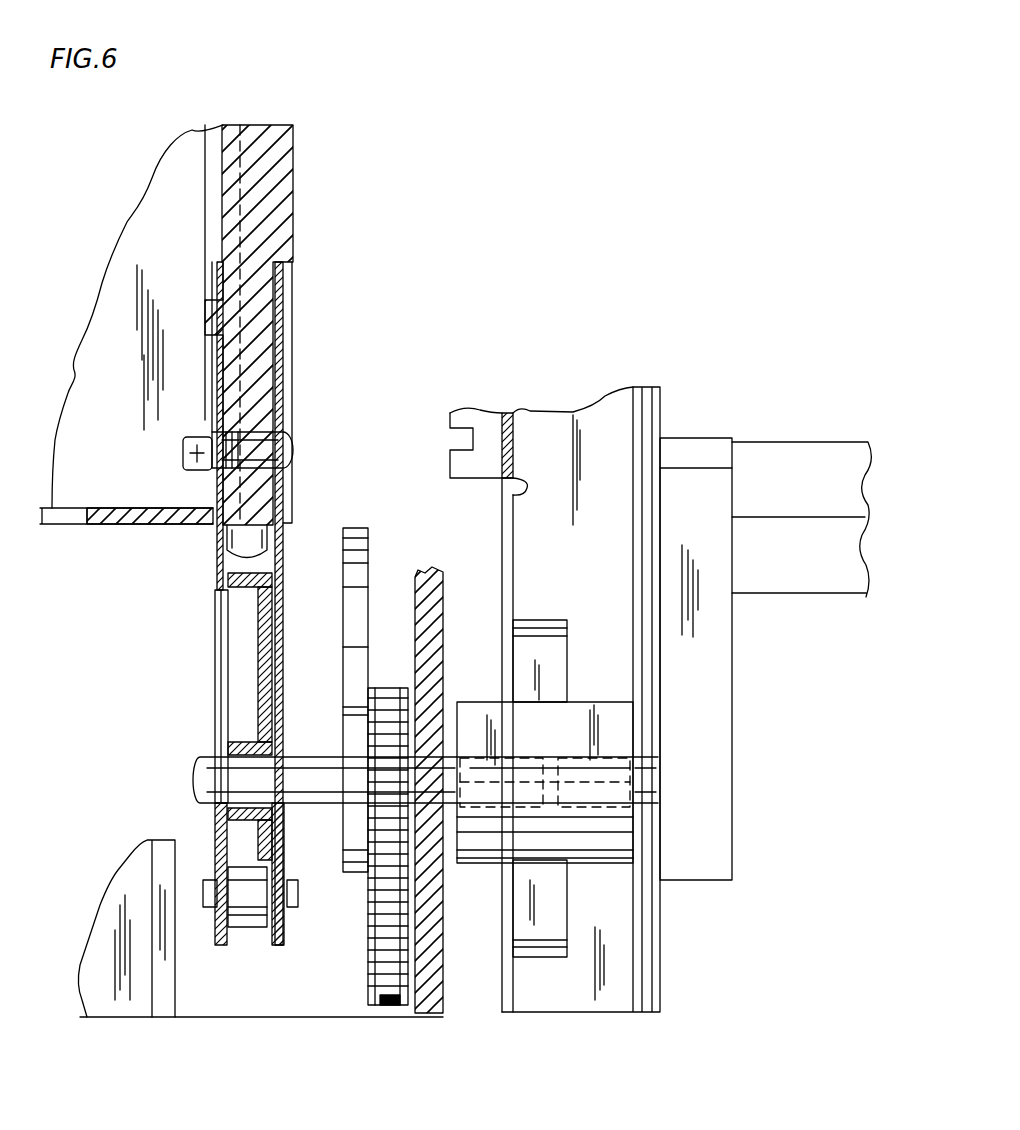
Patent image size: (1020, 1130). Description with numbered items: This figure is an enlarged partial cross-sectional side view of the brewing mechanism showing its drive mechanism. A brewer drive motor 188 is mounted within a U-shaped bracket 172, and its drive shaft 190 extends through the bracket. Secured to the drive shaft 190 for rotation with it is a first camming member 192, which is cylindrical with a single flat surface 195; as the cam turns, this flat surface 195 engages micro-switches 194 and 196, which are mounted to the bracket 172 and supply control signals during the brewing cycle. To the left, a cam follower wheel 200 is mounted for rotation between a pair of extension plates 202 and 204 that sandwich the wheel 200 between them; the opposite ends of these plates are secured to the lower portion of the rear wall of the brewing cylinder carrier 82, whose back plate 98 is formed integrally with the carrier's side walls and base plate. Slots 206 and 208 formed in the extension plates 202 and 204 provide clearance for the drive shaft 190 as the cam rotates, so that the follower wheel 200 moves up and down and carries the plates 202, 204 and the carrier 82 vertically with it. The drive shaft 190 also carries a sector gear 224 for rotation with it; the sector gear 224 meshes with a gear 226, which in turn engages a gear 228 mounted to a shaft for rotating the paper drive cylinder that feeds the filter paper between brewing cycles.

The brewing cylinder carrier 82 is at (130, 505).
The back plate 98 is at (293, 222).
The U-shaped bracket 172 is at (602, 410).
The brewer drive motor 188 is at (778, 442).
The drive shaft 190 is at (200, 775).
The first camming member 192 is at (605, 835).
The micro-switch 194 is at (572, 620).
The flat surface 195 is at (605, 715).
The micro-switch 196 is at (545, 958).
The cam follower wheel 200 is at (253, 928).
The extension plate 202 is at (213, 563).
The extension plate 204 is at (287, 567).
The slot 206 is at (217, 633).
The slot 208 is at (283, 637).
The sector gear 224 is at (368, 623).
The gear 226 is at (383, 1007).
The gear 228 is at (407, 697).